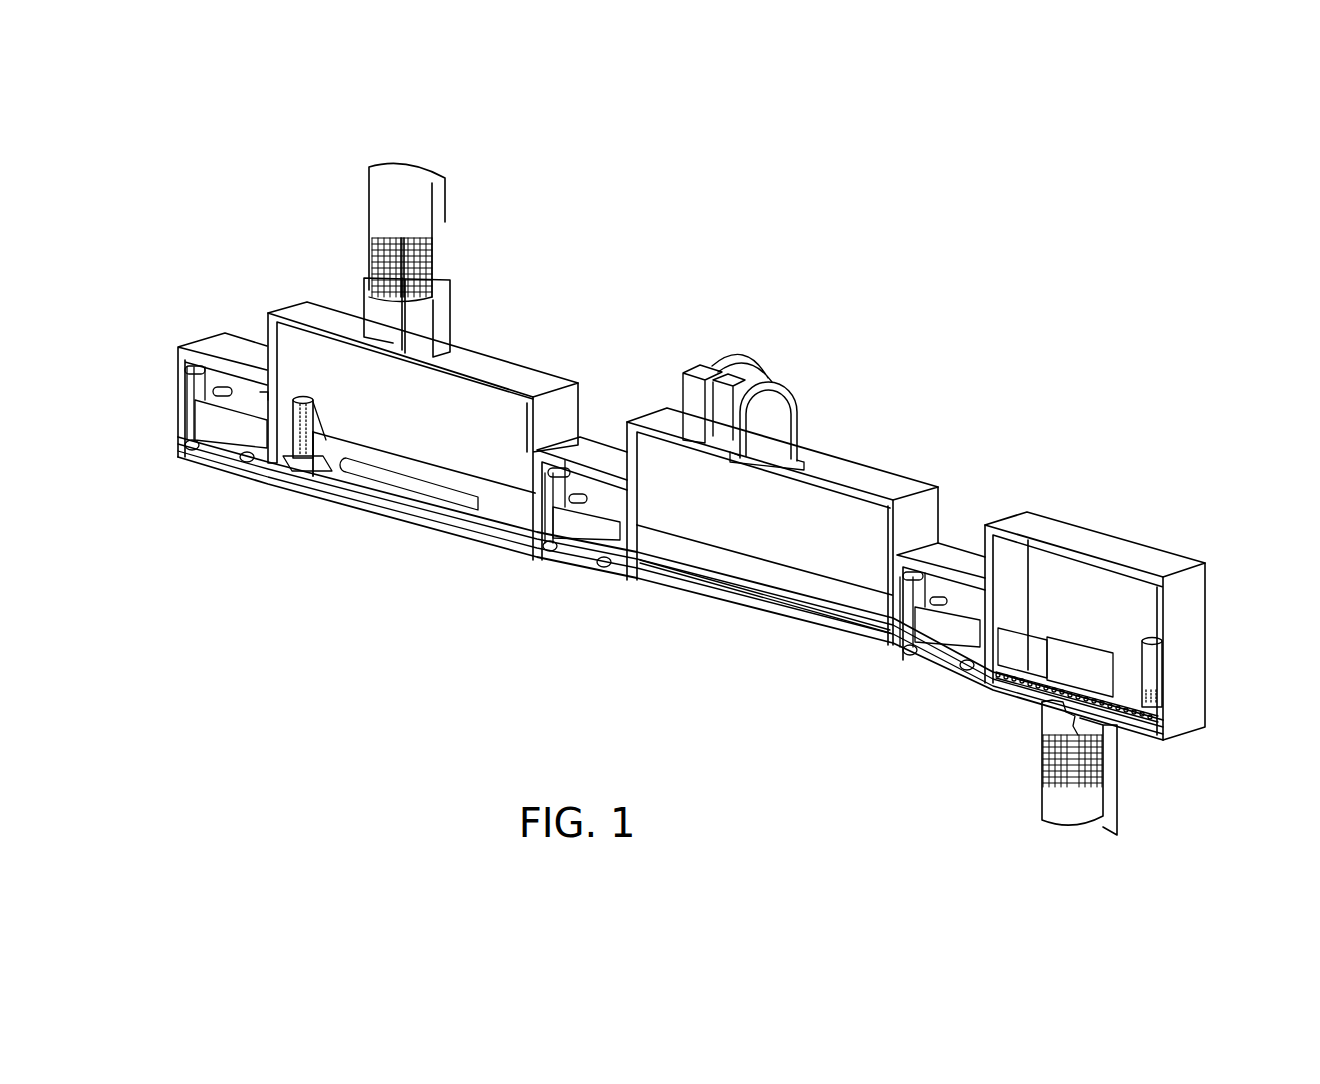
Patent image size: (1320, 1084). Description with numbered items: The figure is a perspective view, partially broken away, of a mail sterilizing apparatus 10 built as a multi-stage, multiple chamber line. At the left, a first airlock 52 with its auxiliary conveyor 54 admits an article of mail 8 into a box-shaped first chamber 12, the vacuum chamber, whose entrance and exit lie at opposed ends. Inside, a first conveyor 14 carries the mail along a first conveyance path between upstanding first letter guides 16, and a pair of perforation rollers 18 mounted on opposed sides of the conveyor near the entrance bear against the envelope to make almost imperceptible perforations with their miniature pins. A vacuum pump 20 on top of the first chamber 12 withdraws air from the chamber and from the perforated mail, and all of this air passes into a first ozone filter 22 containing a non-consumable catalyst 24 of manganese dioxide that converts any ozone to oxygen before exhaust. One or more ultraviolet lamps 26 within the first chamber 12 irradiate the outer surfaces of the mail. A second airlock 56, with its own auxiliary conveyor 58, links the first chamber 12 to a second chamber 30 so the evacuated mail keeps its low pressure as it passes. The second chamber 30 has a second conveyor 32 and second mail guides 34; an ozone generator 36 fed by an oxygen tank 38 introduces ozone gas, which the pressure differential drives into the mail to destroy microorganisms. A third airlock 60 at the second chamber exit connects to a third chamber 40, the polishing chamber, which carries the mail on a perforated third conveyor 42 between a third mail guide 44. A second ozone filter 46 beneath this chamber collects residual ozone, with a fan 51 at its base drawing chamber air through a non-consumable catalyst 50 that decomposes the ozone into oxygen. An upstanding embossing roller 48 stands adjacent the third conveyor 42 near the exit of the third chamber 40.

The article of mail 8 is at (1082, 656).
The mail sterilizing apparatus 10 is at (808, 218).
The first chamber 12 is at (497, 362).
The first conveyor 14 is at (318, 466).
The first letter guide 16 is at (327, 445).
The perforation roller 18 is at (298, 396).
The vacuum pump 20 is at (445, 316).
The first ozone filter 22 is at (437, 214).
The non-consumable catalyst 24 is at (400, 237).
The ultraviolet lamp 26 is at (415, 487).
The second chamber 30 is at (870, 478).
The second conveyor 32 is at (680, 585).
The second mail guide 34 is at (690, 554).
The ozone generator 36 is at (690, 380).
The oxygen tank 38 is at (790, 407).
The third chamber 40 is at (1085, 537).
The third conveyor 42 is at (1000, 690).
The third mail guide 44 is at (1027, 640).
The second ozone filter 46 is at (1111, 814).
The embossing roller 48 is at (1153, 672).
The non-consumable catalyst 50 is at (1105, 753).
The fan 51 is at (1057, 718).
The first airlock 52 is at (241, 337).
The auxiliary conveyor 54 is at (208, 448).
The second airlock 56 is at (595, 446).
The auxiliary conveyor 58 is at (562, 553).
The third airlock 60 is at (946, 550).